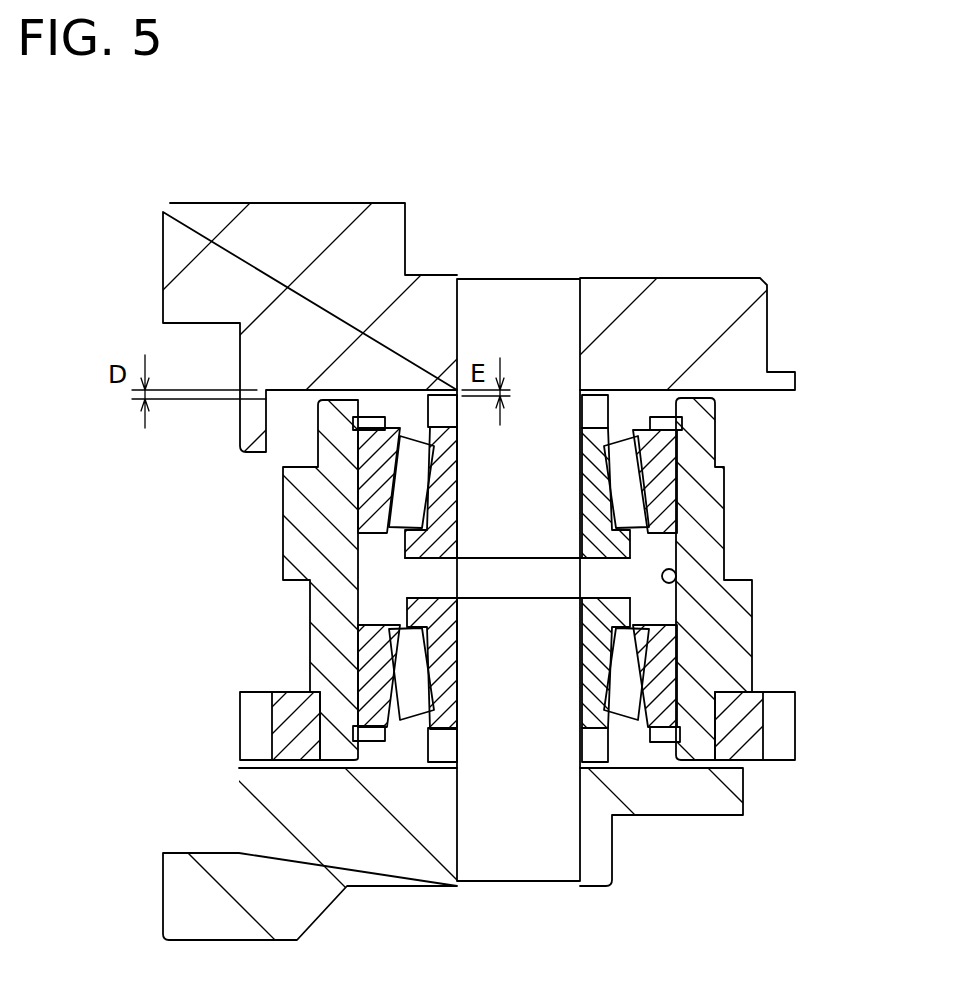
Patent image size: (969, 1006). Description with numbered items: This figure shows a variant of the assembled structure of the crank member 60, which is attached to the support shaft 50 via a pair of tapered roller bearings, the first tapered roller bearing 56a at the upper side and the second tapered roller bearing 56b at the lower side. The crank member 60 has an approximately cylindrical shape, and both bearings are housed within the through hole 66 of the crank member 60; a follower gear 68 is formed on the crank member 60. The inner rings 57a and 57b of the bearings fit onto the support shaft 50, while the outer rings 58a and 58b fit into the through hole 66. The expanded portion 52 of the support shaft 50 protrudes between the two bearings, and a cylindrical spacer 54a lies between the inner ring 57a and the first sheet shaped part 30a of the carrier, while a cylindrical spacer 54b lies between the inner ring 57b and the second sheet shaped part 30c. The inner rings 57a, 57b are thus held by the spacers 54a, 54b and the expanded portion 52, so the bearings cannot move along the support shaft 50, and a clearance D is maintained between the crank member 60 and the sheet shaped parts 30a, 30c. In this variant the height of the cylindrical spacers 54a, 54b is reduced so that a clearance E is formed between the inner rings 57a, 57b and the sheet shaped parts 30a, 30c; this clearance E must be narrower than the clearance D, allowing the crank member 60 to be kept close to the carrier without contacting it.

The first sheet shaped part 30a is at (712, 300).
The second sheet shaped part 30c is at (693, 798).
The support shaft 50 is at (492, 300).
The expanded portion 52 is at (527, 578).
The cylindrical spacer 54a is at (438, 410).
The cylindrical spacer 54b is at (440, 750).
The first tapered roller bearing 56a is at (403, 498).
The second tapered roller bearing 56b is at (402, 647).
The inner ring 57a is at (430, 545).
The inner ring 57b is at (430, 668).
The outer ring 58a is at (378, 464).
The outer ring 58b is at (377, 696).
The crank member 60 is at (722, 610).
The through hole 66 is at (673, 584).
The follower gear 68 is at (750, 725).